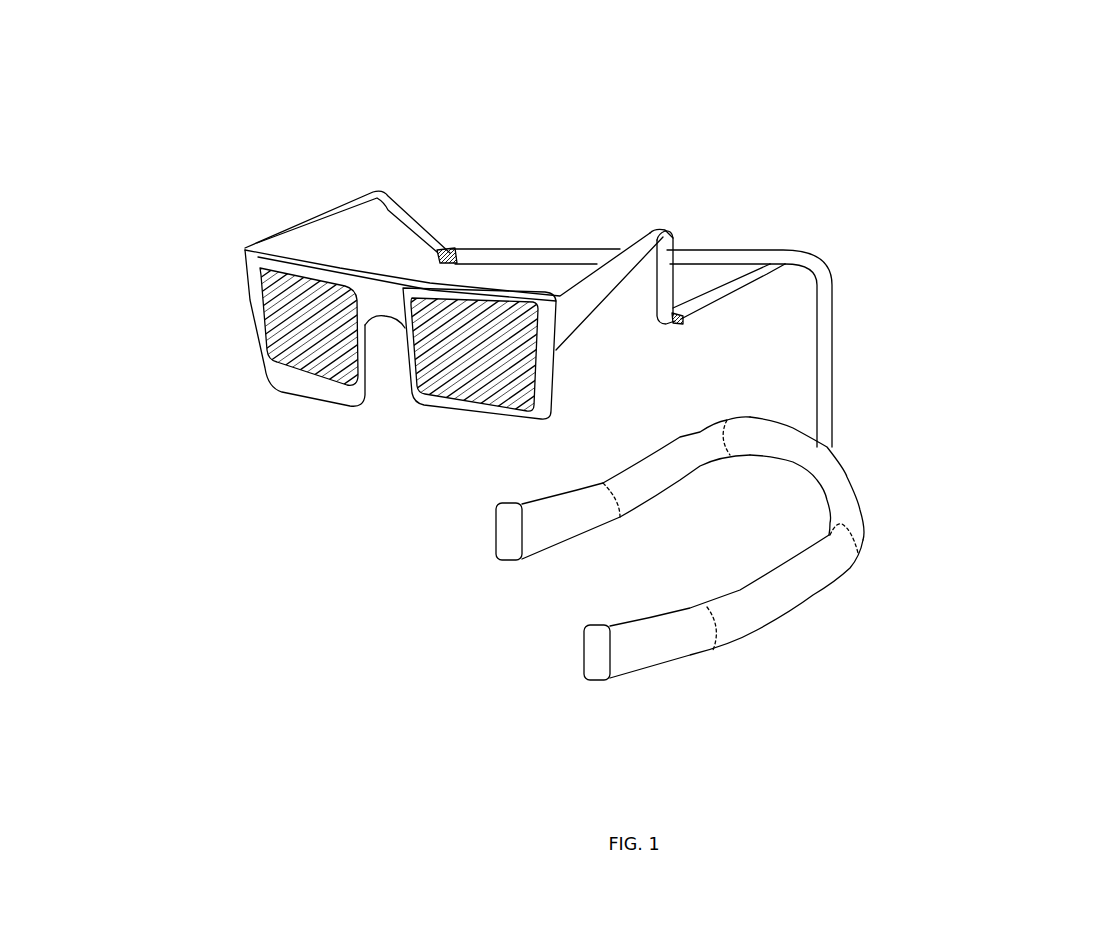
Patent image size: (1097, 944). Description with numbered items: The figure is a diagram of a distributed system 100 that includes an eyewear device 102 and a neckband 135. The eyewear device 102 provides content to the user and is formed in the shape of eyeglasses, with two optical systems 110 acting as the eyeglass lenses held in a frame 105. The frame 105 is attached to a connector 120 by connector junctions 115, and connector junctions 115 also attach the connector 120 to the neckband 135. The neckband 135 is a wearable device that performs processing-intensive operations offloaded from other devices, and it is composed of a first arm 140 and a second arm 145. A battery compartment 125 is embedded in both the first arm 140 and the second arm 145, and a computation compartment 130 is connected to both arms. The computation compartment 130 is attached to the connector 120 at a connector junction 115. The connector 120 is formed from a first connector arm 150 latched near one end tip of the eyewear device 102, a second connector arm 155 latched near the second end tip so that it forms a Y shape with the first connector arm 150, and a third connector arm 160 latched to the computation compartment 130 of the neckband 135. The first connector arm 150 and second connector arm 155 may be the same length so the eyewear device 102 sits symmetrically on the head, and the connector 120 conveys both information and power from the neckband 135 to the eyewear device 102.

The distributed system 100 is at (77, 96).
The eyewear device 102 is at (243, 408).
The frame 105 is at (590, 277).
The optical systems 110 is at (340, 357).
The connector junctions 115 is at (888, 427).
The connector 120 is at (830, 272).
The battery compartment 125 is at (643, 488).
The computation compartment 130 is at (817, 543).
The neckband 135 is at (582, 672).
The first arm 140 is at (500, 475).
The second arm 145 is at (610, 685).
The first connector arm 150 is at (537, 248).
The second connector arm 155 is at (713, 297).
The third connector arm 160 is at (833, 373).